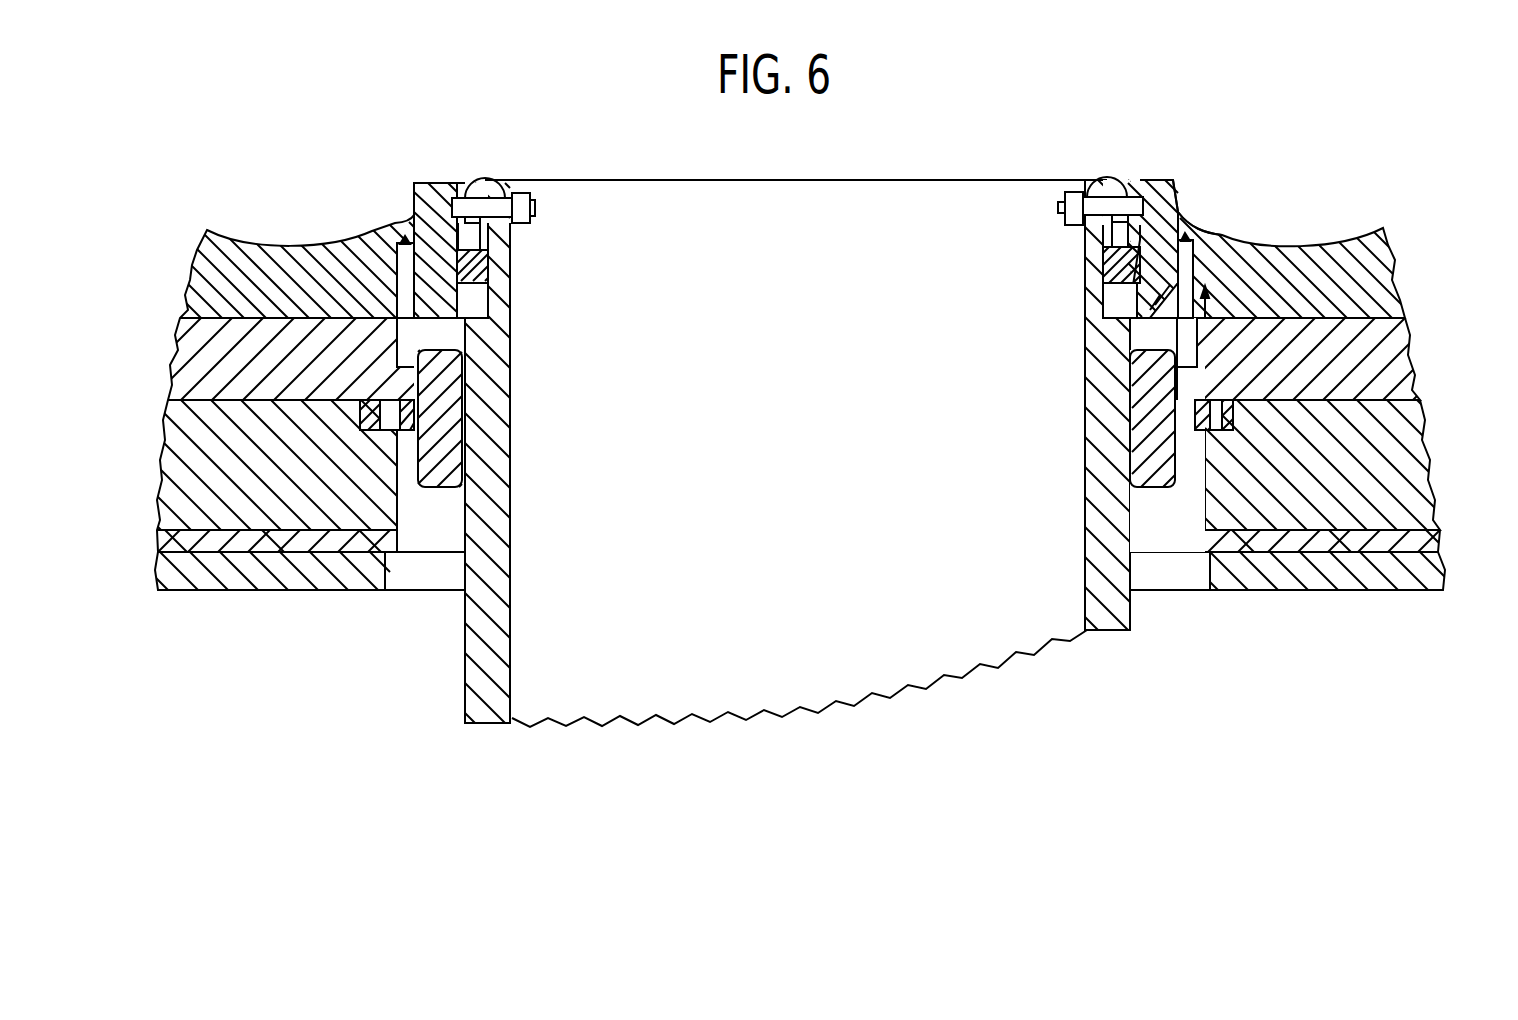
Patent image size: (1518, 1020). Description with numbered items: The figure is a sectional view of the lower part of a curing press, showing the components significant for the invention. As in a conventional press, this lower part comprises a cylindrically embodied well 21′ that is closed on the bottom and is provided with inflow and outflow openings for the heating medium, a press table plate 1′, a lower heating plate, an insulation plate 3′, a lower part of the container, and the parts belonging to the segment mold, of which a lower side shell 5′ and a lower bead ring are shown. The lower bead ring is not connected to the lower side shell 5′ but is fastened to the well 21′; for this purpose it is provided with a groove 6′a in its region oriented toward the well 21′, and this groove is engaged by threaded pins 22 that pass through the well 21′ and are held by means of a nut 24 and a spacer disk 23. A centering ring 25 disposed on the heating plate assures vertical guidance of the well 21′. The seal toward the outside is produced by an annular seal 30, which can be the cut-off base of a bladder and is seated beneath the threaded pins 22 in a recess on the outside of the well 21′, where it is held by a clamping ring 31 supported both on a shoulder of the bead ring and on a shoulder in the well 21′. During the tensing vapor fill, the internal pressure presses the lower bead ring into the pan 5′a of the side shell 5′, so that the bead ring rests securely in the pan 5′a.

The nut 24 is at (1060, 203).
The spacer disk 23 is at (1087, 192).
The threaded pins 22 is at (1115, 192).
The groove 6′a is at (1173, 190).
The annular seal 30 is at (1122, 232).
The clamping ring 31 is at (1122, 265).
The pan 5′a is at (1202, 318).
The lower side shell 5′ is at (1365, 285).
The insulation plate 3′ is at (1435, 540).
The press table plate 1′ is at (1365, 580).
The well 21′ is at (1115, 612).
The centering ring 25 is at (1155, 470).